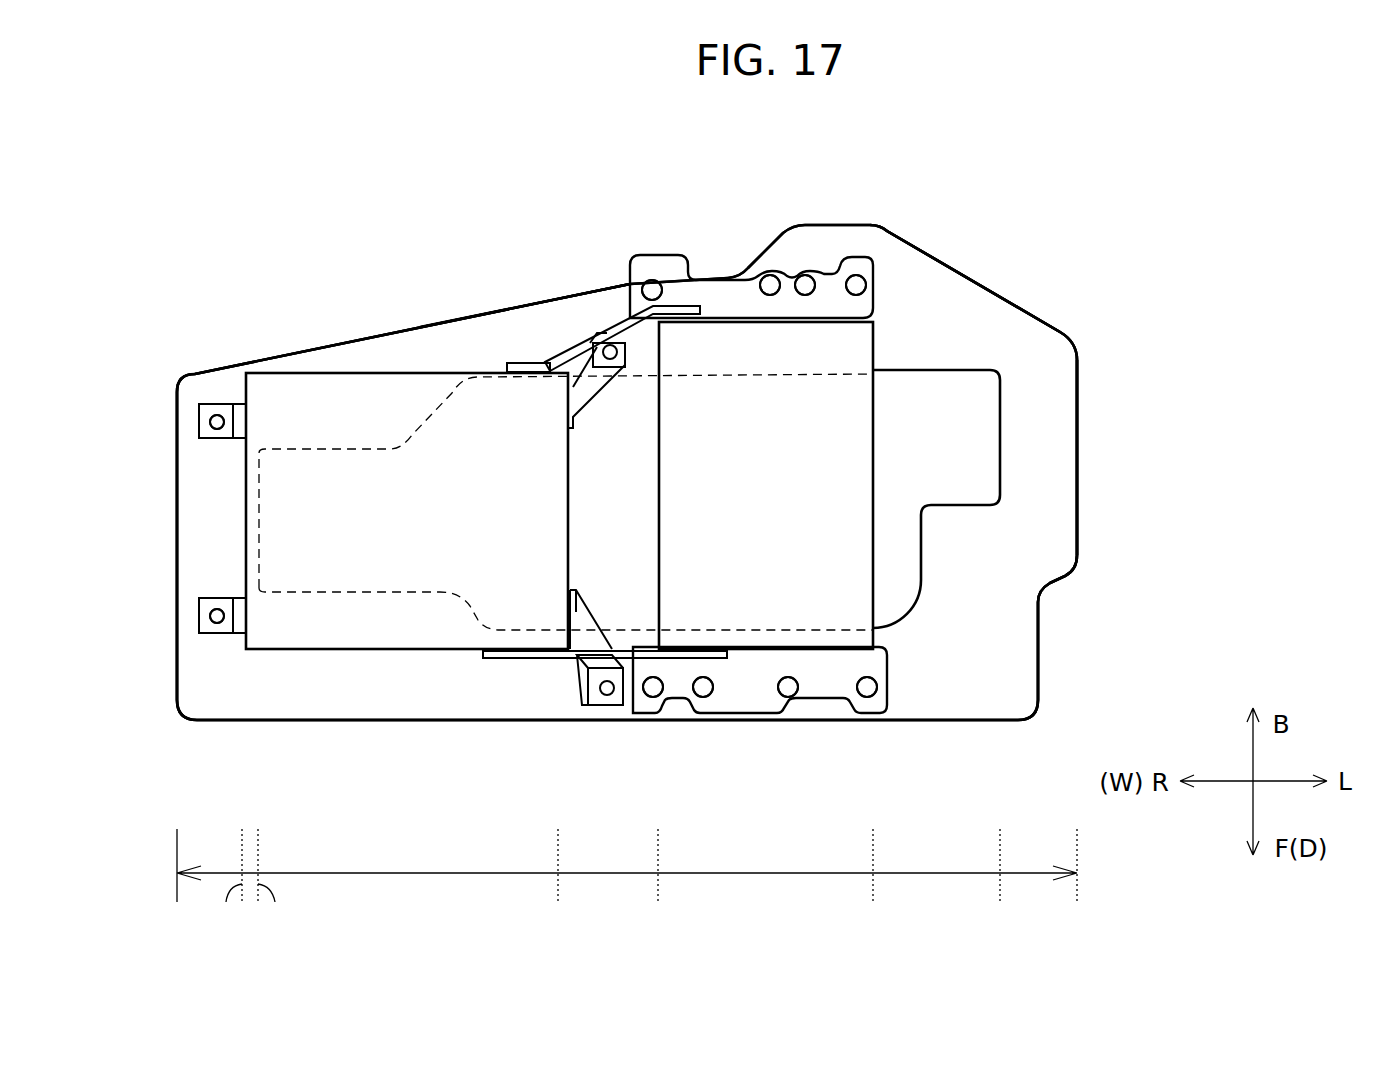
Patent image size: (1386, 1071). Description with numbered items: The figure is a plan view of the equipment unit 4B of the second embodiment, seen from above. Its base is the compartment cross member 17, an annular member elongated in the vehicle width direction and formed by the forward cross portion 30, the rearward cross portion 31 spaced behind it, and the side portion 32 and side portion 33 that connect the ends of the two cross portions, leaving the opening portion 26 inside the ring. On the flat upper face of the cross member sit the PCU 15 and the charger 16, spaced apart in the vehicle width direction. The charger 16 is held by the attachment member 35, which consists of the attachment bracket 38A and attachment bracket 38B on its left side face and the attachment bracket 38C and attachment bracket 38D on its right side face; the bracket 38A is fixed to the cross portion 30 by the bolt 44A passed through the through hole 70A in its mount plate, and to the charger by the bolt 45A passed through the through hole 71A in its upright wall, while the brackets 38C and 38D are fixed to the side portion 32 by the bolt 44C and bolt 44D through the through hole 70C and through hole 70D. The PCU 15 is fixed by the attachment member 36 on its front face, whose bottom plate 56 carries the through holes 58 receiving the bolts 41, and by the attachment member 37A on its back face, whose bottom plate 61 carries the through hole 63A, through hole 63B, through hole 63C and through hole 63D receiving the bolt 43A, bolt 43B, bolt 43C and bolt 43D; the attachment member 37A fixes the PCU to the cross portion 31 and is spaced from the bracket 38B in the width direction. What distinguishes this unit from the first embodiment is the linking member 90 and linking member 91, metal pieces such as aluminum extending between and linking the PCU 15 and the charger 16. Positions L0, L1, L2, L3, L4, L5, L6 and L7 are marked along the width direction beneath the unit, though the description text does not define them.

The equipment unit 4B is at (545, 148).
The PCU 15 is at (862, 456).
The charger 16 is at (270, 520).
The compartment cross member 17 is at (1010, 276).
The opening portion 26 is at (990, 416).
The cross portion 30 is at (458, 710).
The cross portion 31 is at (496, 338).
The side portion 32 is at (186, 581).
The side portion 33 is at (1063, 461).
The attachment member 35 is at (403, 311).
The attachment member 36 is at (916, 733).
The attachment member 37A is at (929, 209).
The attachment bracket 38A is at (609, 645).
The attachment bracket 38B is at (602, 393).
The attachment bracket 38C is at (199, 617).
The attachment bracket 38D is at (199, 422).
The bolts 41 is at (758, 747).
The bolt 43A is at (653, 237).
The bolt 43B is at (747, 227).
The bolt 43C is at (803, 201).
The bolt 43D is at (855, 227).
The bolt 44A is at (590, 749).
The bolt 44C is at (213, 713).
The bolt 44D is at (217, 355).
The bolt 45A is at (595, 292).
The bottom plate 56 is at (876, 673).
The through holes 58 is at (652, 698).
The bottom plate 61 is at (876, 302).
The through hole 63A is at (652, 280).
The through hole 63B is at (770, 275).
The through hole 63C is at (805, 275).
The through hole 63D is at (856, 275).
The through hole 70A is at (609, 700).
The through hole 70C is at (217, 624).
The through hole 70D is at (217, 414).
The through hole 71A is at (607, 345).
The linking member 90 is at (522, 659).
The linking member 91 is at (537, 363).
The position L0 is at (177, 884).
The position L1 is at (230, 884).
The position L2 is at (274, 884).
The position L3 is at (560, 884).
The position L4 is at (658, 884).
The position L5 is at (873, 884).
The position L6 is at (999, 884).
The position L7 is at (1078, 884).